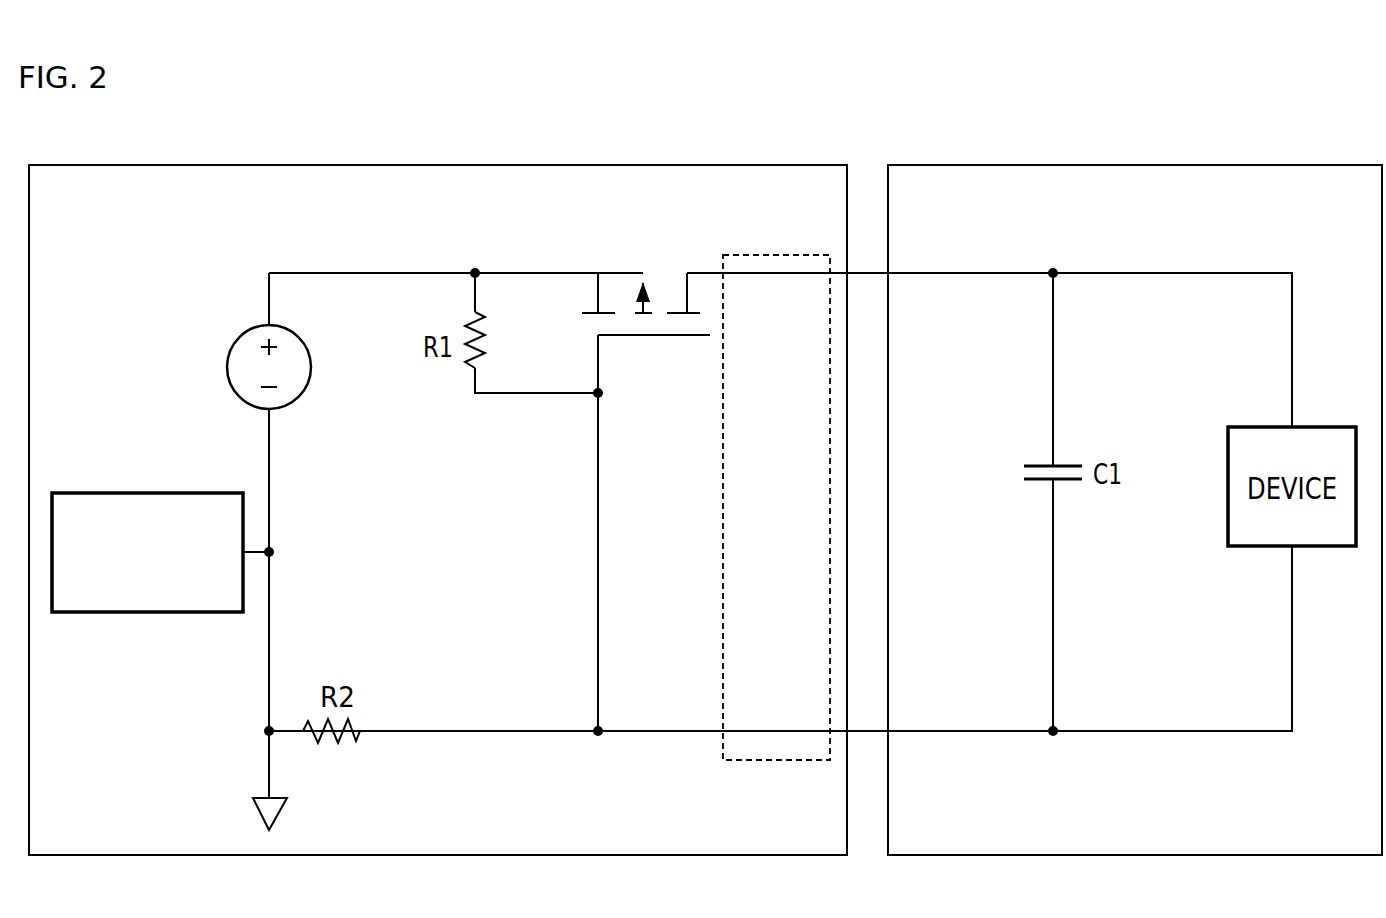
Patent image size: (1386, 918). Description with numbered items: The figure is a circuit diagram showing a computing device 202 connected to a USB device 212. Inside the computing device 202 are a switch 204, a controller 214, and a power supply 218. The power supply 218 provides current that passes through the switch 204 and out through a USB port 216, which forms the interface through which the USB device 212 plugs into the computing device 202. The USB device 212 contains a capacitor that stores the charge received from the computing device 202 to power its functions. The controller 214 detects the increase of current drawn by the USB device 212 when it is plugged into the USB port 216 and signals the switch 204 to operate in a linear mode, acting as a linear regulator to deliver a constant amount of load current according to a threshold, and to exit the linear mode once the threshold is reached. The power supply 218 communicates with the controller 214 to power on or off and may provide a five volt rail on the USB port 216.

The computing device 202 is at (557, 147).
The USB device 212 is at (1097, 142).
The switch 204 is at (625, 235).
The USB port 216 is at (735, 237).
The controller 214 is at (90, 490).
The power supply 218 is at (228, 358).